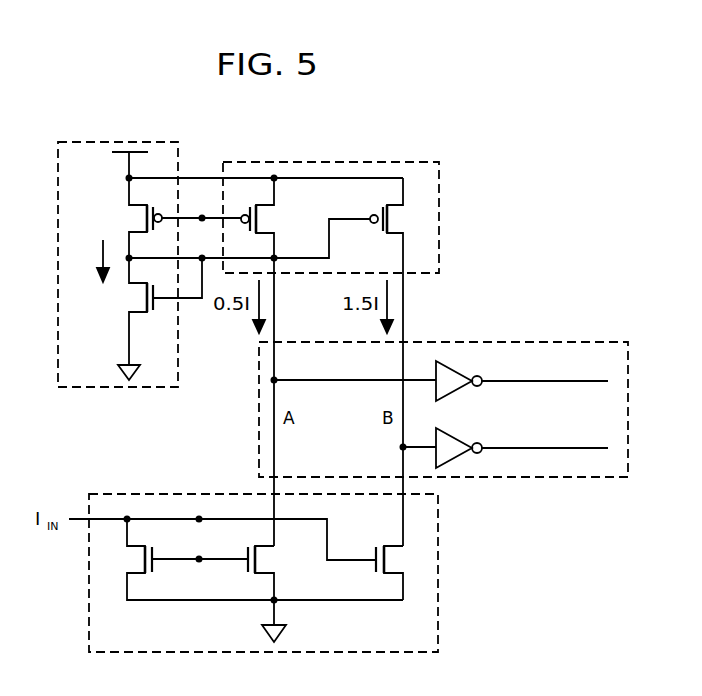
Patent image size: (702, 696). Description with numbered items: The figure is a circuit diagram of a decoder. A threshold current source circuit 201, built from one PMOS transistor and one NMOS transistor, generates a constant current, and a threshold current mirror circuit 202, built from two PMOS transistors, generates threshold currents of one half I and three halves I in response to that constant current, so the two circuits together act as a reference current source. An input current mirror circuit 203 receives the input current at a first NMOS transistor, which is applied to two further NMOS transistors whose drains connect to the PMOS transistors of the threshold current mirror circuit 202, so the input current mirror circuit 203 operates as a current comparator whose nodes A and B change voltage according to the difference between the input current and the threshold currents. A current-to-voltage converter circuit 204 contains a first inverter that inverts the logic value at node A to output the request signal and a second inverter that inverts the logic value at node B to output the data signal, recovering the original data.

The threshold current source circuit 201 is at (122, 142).
The threshold current mirror circuit 202 is at (385, 162).
The input current mirror circuit 203 is at (129, 494).
The current-to-voltage converter circuit 204 is at (573, 342).